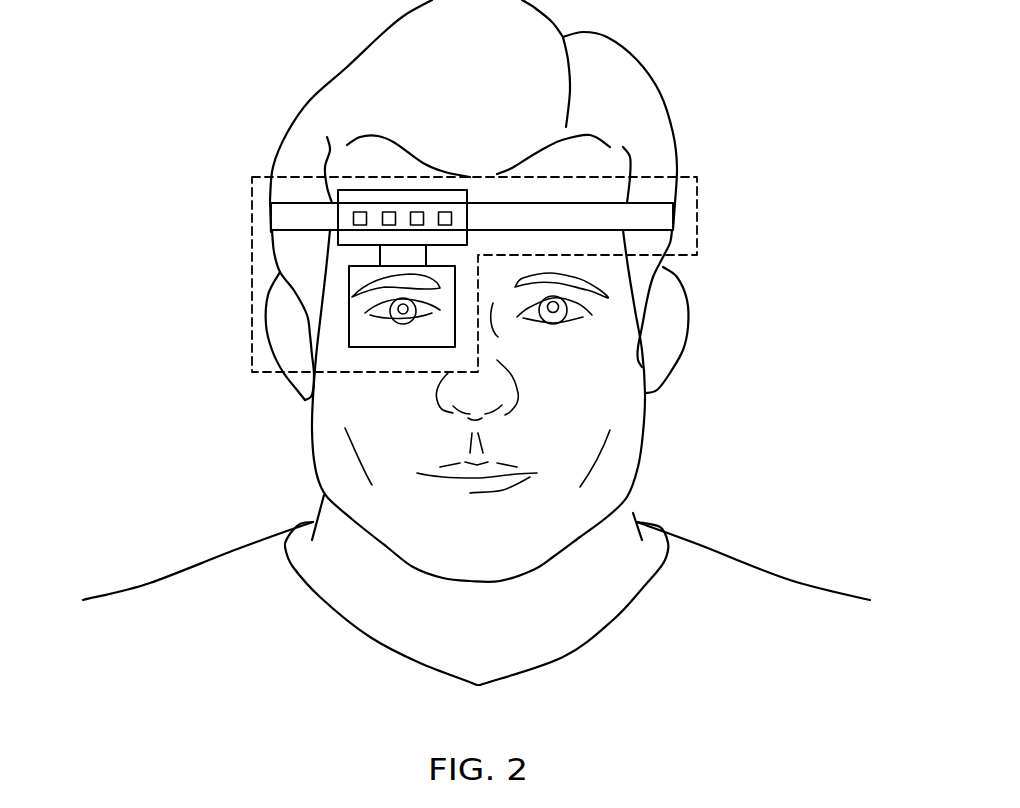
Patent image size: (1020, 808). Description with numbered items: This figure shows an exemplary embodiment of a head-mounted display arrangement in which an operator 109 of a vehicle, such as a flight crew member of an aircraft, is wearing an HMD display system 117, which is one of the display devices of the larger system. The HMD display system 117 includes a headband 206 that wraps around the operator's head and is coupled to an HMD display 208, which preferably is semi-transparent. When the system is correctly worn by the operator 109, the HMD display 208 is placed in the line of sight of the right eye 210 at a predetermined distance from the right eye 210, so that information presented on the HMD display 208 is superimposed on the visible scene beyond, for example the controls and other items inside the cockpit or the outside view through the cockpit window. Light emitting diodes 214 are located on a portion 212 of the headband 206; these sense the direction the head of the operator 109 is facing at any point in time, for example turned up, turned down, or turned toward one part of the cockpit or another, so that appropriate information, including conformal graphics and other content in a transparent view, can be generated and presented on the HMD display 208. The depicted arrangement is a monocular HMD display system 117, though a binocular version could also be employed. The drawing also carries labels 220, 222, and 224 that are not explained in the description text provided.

The operator 109 is at (476, 342).
The HMD display system 117 is at (693, 243).
The headband 206 is at (673, 217).
The HMD display 208 is at (350, 330).
The right eye 210 is at (402, 323).
The portion of the headband 212 is at (457, 193).
The light emitting diodes 214 is at (357, 212).
The eye of user 220 is at (553, 324).
The first end of headband 222 is at (278, 218).
The second end of headband 224 is at (640, 213).